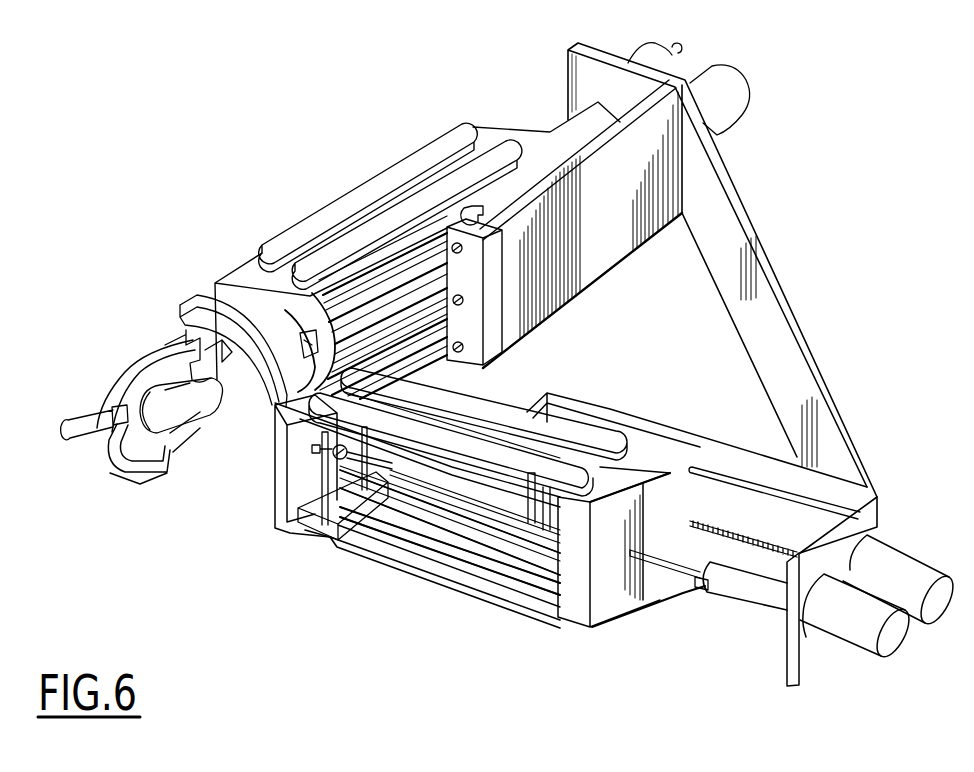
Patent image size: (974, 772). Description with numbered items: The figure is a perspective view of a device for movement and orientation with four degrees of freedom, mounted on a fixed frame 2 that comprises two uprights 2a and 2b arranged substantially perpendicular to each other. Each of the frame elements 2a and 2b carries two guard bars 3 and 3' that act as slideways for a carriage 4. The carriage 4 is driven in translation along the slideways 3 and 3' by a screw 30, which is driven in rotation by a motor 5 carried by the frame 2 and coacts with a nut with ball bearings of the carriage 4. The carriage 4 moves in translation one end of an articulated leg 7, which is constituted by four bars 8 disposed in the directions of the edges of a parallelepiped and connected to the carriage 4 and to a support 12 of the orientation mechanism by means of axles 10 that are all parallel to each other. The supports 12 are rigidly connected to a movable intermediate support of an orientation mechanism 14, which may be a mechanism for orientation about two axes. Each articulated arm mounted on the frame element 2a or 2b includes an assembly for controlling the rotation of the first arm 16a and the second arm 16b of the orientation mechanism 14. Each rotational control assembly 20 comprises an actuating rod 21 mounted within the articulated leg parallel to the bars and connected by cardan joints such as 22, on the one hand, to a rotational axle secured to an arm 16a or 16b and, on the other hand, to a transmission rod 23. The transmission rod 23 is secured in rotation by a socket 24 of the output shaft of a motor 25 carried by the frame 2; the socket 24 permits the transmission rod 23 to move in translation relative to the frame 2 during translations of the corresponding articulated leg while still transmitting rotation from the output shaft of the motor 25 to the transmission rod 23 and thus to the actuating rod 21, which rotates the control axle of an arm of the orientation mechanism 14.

The fixed frame 2 is at (808, 348).
The upright 2a is at (667, 433).
The upright 2b is at (613, 238).
The guard bar 3 is at (774, 463).
The guard bar 3' is at (691, 604).
The carriage 4 is at (640, 590).
The motor 5 is at (880, 557).
The articulated leg 7 is at (464, 579).
The bar 8 is at (527, 592).
The axle 10 is at (303, 510).
The support 12 is at (275, 533).
The orientation mechanism 14 is at (135, 500).
The first arm 16a is at (260, 387).
The second arm 16b is at (165, 450).
The rotational control assembly 20 is at (407, 493).
The actuating rod 21 is at (476, 500).
The cardan joint 22 is at (350, 453).
The transmission rod 23 is at (653, 553).
The socket 24 is at (770, 597).
The motor 25 is at (860, 640).
The screw 30 is at (775, 540).